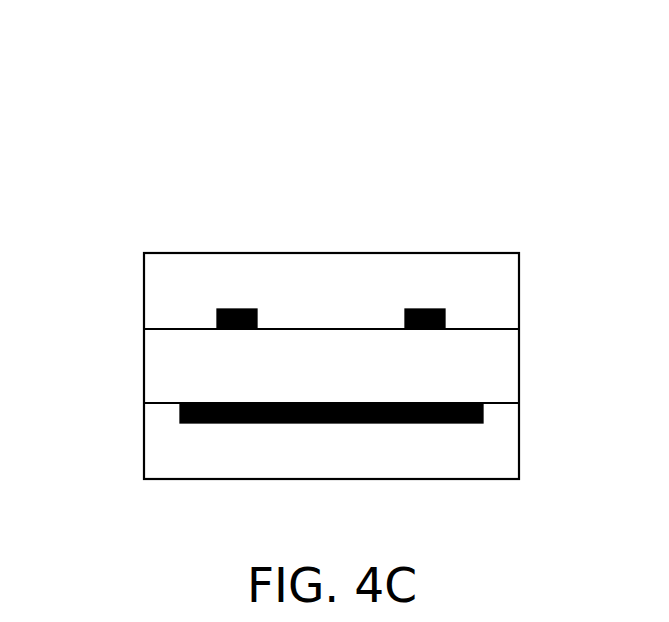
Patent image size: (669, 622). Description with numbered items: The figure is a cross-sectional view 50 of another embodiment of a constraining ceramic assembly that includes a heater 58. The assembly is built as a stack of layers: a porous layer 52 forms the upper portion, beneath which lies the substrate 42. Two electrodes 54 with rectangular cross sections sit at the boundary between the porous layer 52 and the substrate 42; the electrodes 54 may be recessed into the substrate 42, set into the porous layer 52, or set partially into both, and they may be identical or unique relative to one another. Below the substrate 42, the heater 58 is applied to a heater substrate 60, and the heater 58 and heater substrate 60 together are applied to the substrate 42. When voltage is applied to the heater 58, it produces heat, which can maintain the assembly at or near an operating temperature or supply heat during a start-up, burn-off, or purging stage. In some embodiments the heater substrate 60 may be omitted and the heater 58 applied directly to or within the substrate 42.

The cross-sectional view 50 is at (138, 50).
The substrate 42 is at (520, 372).
The porous layer 52 is at (495, 253).
The electrodes 54 is at (252, 309).
The heater 58 is at (345, 403).
The heater substrate 60 is at (494, 480).